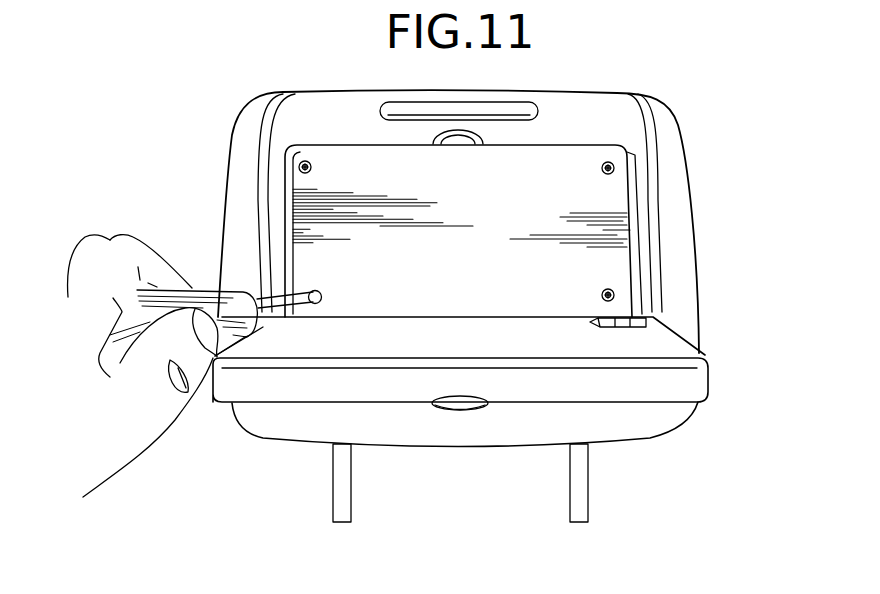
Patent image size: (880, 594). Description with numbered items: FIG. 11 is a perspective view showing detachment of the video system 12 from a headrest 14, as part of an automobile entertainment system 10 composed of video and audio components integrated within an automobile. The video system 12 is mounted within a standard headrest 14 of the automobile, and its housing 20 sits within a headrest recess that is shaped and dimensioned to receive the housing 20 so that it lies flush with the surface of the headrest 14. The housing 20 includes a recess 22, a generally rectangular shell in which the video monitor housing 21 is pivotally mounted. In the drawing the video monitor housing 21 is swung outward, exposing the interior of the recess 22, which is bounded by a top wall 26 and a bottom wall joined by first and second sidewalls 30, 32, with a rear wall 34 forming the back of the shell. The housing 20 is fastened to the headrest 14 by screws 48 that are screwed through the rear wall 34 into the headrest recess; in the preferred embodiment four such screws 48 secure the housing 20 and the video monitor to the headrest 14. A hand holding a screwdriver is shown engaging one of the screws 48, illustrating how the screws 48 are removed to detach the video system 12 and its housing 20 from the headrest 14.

The automobile entertainment system 10 is at (485, 274).
The video system 12 is at (302, 103).
The headrest 14 is at (683, 292).
The housing 20 is at (592, 100).
The video monitor housing 21 is at (420, 337).
The recess 22 is at (347, 170).
The top wall 26 is at (560, 143).
The first sidewall 30 is at (288, 222).
The second sidewall 32 is at (636, 228).
The rear wall 34 is at (400, 163).
The screws 48 is at (299, 166).